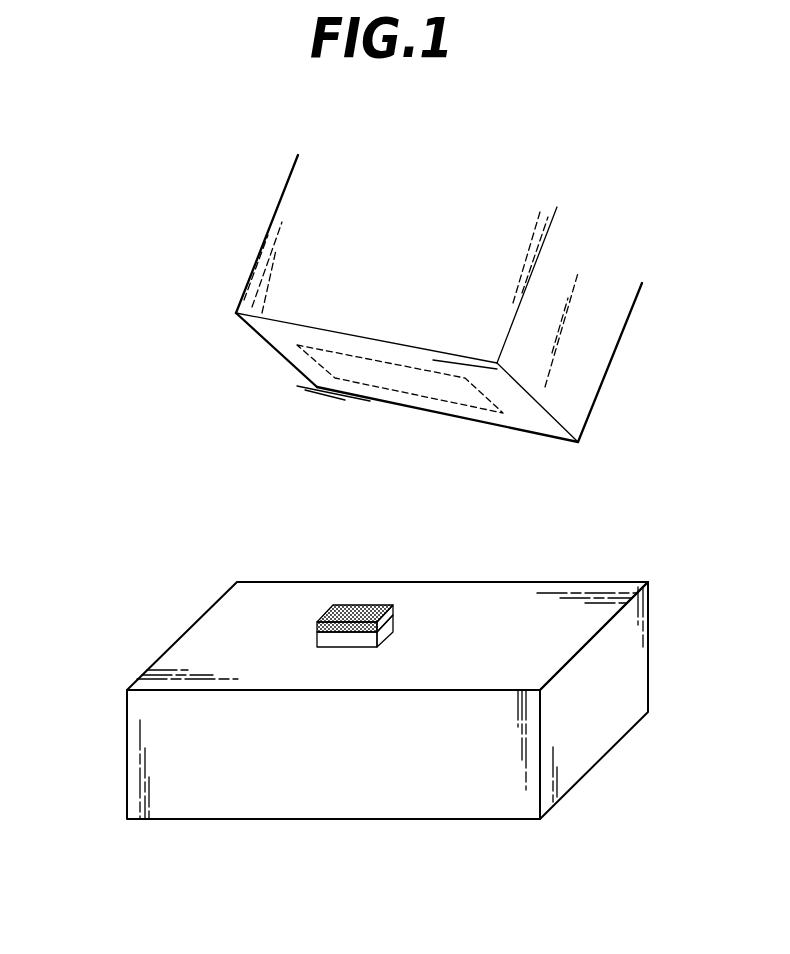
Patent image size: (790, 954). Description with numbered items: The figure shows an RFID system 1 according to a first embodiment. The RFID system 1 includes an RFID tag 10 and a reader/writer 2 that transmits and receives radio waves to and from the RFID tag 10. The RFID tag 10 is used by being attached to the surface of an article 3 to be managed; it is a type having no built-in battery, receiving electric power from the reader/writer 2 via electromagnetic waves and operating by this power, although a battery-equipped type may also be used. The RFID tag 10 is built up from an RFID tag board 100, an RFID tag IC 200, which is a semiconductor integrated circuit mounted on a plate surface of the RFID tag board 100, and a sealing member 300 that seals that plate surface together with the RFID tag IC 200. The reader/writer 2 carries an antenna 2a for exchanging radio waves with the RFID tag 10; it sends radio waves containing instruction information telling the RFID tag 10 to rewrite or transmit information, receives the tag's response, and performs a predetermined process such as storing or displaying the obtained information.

The RFID system 1 is at (97, 233).
The reader/writer 2 is at (575, 372).
The antenna 2a is at (445, 400).
The article 3 is at (633, 670).
The RFID tag 10 is at (178, 462).
The RFID tag board 100 is at (317, 640).
The RFID tag IC 200 is at (333, 622).
The sealing member 300 is at (370, 607).